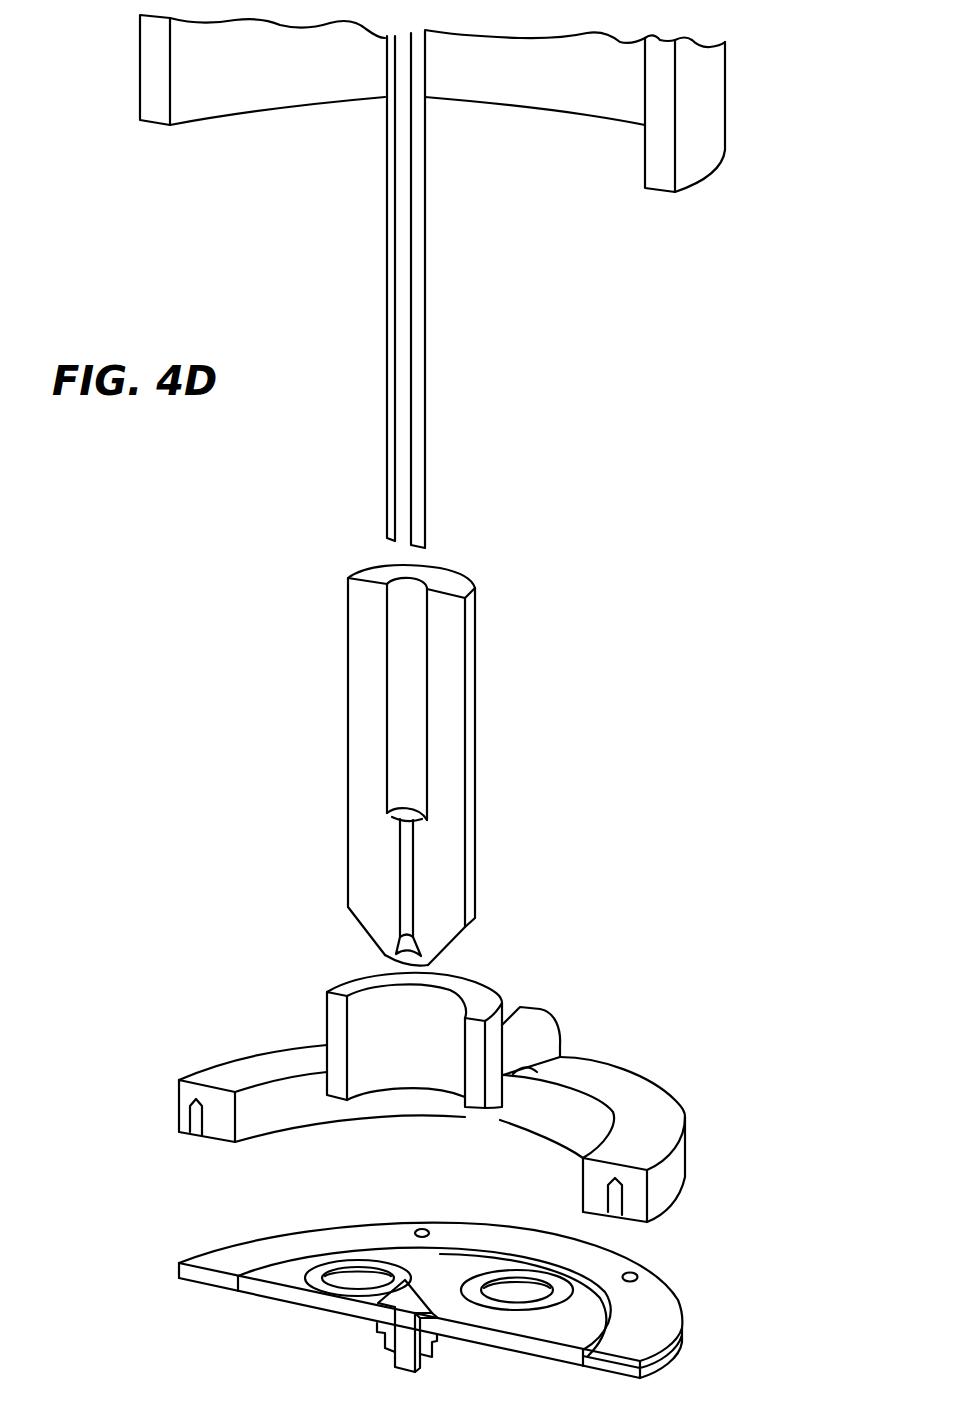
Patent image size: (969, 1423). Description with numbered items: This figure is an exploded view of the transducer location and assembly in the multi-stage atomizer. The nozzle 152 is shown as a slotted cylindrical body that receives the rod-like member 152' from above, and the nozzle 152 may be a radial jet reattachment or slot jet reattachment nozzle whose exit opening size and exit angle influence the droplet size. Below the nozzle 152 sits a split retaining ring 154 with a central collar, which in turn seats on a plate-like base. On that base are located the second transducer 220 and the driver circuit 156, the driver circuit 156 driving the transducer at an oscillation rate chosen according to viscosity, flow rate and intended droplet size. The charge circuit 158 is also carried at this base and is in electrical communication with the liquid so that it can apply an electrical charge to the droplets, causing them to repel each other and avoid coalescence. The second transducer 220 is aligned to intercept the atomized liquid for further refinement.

The drive rod with T-handle 152' is at (432, 281).
The nozzle 152 is at (492, 765).
The split ring with collar 154 is at (632, 1072).
The driver circuit 156 is at (450, 1265).
The charge circuit 158 is at (677, 1288).
The second transducer 220 is at (343, 1277).